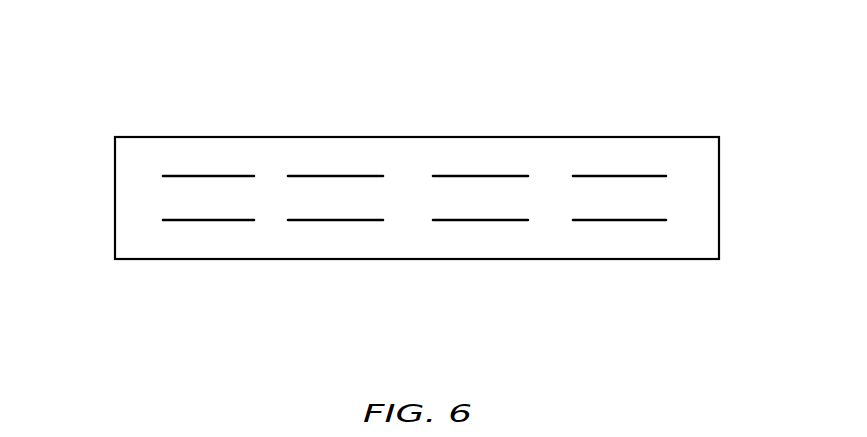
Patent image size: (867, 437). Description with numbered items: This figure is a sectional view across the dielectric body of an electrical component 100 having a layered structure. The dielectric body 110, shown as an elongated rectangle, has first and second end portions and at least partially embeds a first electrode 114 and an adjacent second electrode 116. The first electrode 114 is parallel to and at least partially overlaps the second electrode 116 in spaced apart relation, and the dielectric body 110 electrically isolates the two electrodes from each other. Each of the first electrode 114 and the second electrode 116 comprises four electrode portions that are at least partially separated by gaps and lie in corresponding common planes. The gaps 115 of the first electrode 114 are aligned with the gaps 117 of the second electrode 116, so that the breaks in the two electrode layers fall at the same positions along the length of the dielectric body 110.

The electrical component 100 is at (107, 73).
The dielectric body 110 is at (115, 198).
The first electrode 114 is at (701, 178).
The gaps of the first electrode 115 is at (270, 178).
The second electrode 116 is at (701, 221).
The gaps of the second electrode 117 is at (270, 222).